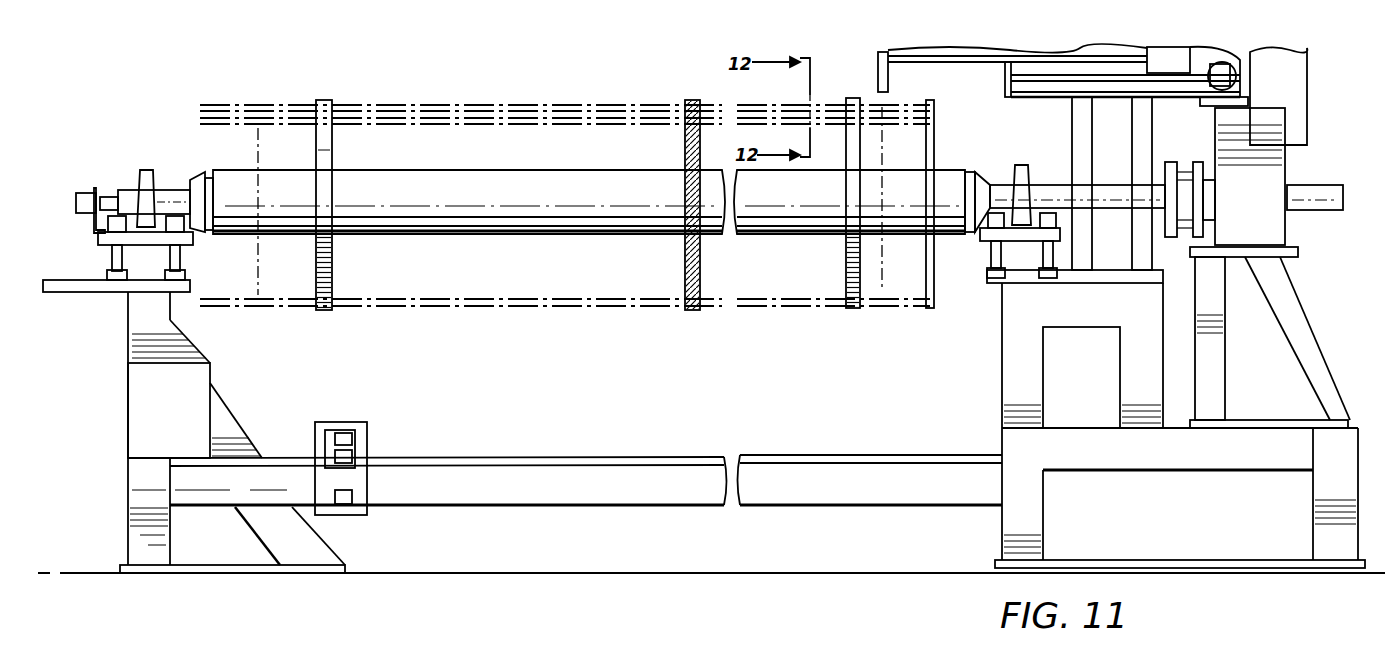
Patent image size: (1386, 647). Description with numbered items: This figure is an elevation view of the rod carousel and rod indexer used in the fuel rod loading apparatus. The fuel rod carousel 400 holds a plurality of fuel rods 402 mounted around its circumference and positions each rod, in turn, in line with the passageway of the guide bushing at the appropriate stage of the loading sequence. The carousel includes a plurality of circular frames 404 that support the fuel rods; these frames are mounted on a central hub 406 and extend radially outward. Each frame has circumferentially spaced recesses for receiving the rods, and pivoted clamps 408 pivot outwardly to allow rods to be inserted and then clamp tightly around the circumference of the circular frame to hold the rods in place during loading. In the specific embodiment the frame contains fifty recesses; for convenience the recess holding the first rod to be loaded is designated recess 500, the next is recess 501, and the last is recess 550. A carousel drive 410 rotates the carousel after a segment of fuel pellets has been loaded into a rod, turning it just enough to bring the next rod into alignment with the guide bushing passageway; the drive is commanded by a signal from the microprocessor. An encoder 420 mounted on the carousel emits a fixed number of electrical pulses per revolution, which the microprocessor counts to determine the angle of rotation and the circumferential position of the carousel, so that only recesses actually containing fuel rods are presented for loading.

The fuel rod carousel 400 is at (737, 326).
The fuel rods 402 is at (509, 120).
The circular frames 404 is at (328, 158).
The central hub 406 is at (533, 217).
The pivoted clamps 408 is at (565, 551).
The carousel drive 410 is at (1273, 174).
The encoder 420 is at (107, 200).
The first recess 500 is at (350, 534).
The next recess 501 is at (384, 568).
The last recess 550 is at (194, 463).